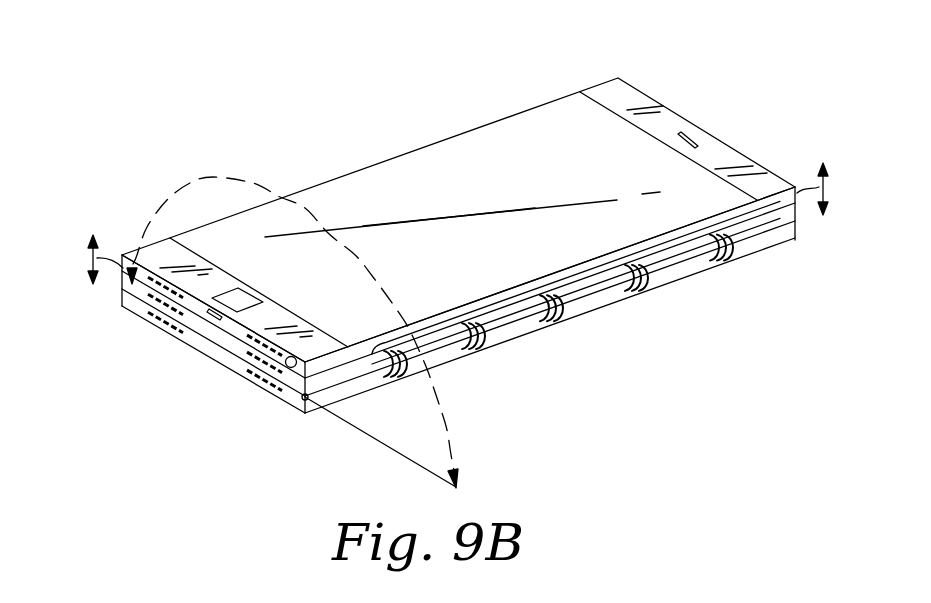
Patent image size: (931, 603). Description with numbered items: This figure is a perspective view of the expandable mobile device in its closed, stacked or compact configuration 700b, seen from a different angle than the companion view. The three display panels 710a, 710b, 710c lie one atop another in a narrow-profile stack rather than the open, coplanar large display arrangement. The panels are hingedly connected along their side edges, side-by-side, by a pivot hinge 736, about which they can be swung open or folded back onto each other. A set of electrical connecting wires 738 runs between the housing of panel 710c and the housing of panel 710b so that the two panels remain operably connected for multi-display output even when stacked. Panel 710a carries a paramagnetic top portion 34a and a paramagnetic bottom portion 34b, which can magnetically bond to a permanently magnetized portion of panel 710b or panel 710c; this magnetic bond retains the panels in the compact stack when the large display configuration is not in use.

The closed stacked configuration of the expandable mobile device 700b is at (152, 85).
The paramagnetic top portion 34a is at (625, 93).
The paramagnetic bottom portion 34b is at (278, 318).
The electrical connecting wires 738 is at (568, 276).
The display panel 710a is at (772, 222).
The display panel 710b is at (518, 312).
The display panel 710c is at (445, 356).
The pivot hinge 736 is at (304, 398).